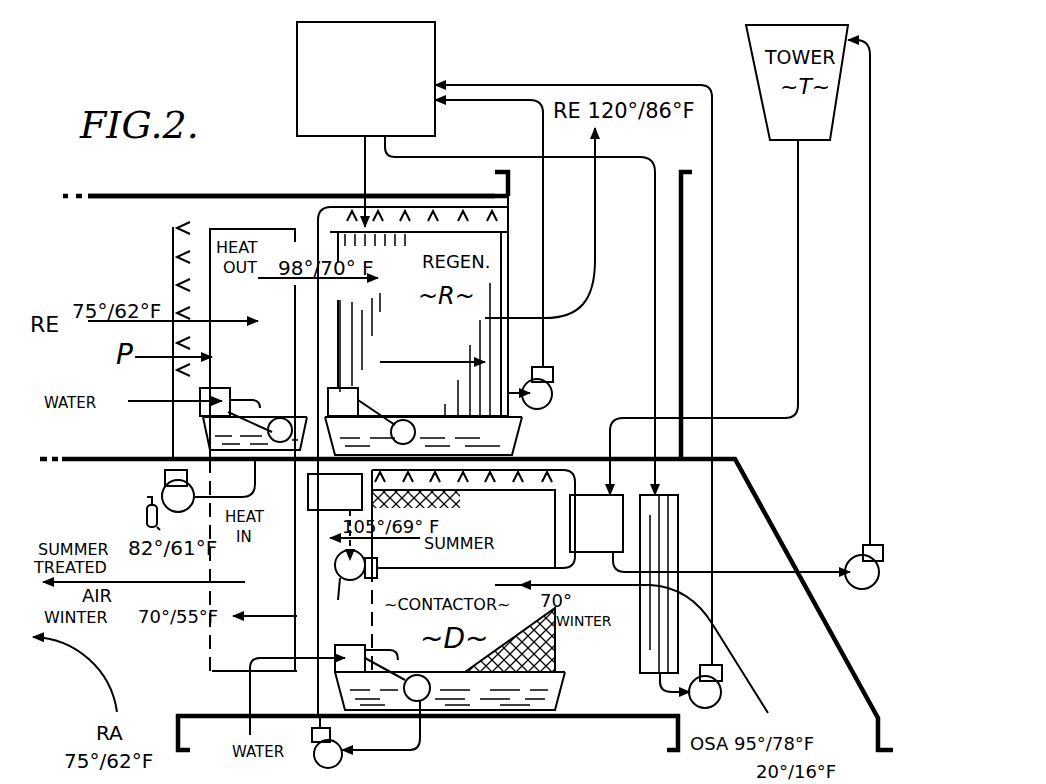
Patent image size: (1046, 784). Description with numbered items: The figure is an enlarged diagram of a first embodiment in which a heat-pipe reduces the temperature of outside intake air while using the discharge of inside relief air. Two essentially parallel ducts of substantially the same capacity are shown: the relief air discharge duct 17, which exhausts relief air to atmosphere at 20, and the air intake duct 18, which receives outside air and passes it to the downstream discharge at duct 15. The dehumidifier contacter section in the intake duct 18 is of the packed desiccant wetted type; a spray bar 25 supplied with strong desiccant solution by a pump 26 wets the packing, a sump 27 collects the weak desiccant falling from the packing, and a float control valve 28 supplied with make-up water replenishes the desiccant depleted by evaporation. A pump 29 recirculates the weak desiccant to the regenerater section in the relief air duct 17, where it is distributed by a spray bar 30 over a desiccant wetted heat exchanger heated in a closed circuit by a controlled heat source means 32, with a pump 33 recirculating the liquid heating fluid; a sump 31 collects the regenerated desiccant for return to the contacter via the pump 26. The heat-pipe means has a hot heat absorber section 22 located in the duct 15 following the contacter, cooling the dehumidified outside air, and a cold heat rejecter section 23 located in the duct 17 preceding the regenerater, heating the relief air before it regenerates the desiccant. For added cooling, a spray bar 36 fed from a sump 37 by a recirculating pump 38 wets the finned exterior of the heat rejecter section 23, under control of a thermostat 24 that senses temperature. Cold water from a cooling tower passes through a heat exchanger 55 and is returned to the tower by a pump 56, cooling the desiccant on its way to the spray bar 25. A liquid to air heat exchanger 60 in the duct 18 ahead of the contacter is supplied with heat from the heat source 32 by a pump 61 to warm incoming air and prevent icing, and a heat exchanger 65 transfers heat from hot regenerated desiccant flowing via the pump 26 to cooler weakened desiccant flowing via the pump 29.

The duct 15 is at (180, 625).
The relief air discharge duct 17 is at (139, 222).
The air intake duct 18 is at (592, 640).
The relief air exhaust outlet 20 is at (666, 180).
The heat absorber section 22 is at (238, 666).
The heat rejecter section 23 is at (255, 228).
The thermostat 24 is at (147, 517).
The spray bar 25 is at (535, 475).
The pump 26 is at (348, 581).
The sump 27 is at (565, 688).
The float control valve 28 is at (360, 645).
The pump 29 is at (320, 762).
The spray bar 30 is at (456, 186).
The sump 31 is at (525, 425).
The controlled heat source means 32 is at (366, 79).
The pump 33 is at (547, 386).
The spray bar 36 is at (172, 268).
The sump 37 is at (202, 428).
The recirculating pump 38 is at (165, 492).
The heat exchanger 55 is at (594, 498).
The pump 56 is at (858, 558).
The liquid to air heat exchanger 60 is at (678, 538).
The pump 61 is at (690, 697).
The heat exchanger 65 is at (326, 493).